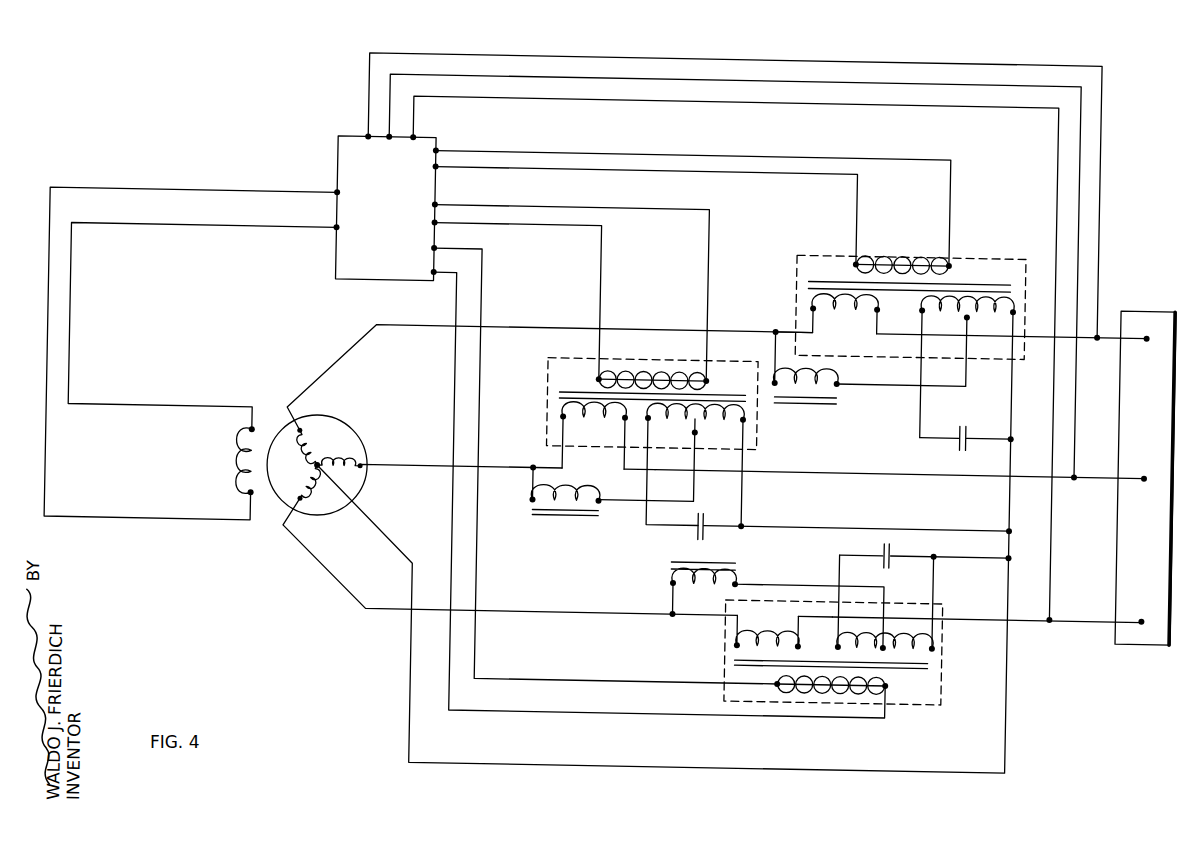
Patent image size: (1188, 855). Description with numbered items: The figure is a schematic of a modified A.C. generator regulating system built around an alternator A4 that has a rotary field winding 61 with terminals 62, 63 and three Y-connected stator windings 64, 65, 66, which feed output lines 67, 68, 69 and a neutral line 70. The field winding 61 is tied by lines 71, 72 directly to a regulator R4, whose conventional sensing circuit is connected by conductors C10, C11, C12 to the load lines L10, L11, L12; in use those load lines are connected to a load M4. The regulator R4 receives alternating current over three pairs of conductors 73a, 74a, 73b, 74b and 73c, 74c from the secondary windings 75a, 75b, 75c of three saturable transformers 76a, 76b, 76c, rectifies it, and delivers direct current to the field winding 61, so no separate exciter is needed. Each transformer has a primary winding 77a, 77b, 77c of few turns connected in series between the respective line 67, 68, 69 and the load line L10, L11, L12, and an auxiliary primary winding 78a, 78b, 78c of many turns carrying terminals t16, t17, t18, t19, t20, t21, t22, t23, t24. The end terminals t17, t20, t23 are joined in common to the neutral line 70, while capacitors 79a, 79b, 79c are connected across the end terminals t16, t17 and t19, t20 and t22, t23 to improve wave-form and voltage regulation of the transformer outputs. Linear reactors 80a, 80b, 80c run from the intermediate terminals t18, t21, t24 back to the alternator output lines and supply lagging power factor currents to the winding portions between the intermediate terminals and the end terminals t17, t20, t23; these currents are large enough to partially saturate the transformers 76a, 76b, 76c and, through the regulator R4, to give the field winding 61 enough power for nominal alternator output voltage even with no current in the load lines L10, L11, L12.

The regulator R4 is at (340, 137).
The conductor C10 is at (1103, 130).
The conductor C11 is at (1081, 176).
The conductor C12 is at (1058, 218).
The load M4 is at (1130, 312).
The alternator A4 is at (368, 490).
The rotary field winding 61 is at (245, 455).
The terminal 62 is at (252, 429).
The terminal 63 is at (251, 495).
The stator winding 64 is at (305, 437).
The stator winding 65 is at (345, 462).
The stator winding 66 is at (308, 492).
The output line 67 is at (430, 326).
The output line 68 is at (489, 465).
The output line 69 is at (520, 612).
The neutral line 70 is at (522, 762).
The line 71 is at (47, 348).
The line 72 is at (71, 358).
The conductor 73a is at (809, 158).
The conductor 73b is at (660, 210).
The conductor 73c is at (578, 678).
The conductor 74a is at (779, 173).
The conductor 74b is at (590, 226).
The conductor 74c is at (655, 715).
The secondary winding 75a is at (874, 265).
The secondary winding 75b is at (638, 380).
The secondary winding 75c is at (837, 694).
The saturable transformer 76a is at (797, 262).
The saturable transformer 76b is at (548, 363).
The saturable transformer 76c is at (942, 693).
The primary winding 77a is at (810, 310).
The primary winding 77b is at (561, 417).
The primary winding 77c is at (734, 647).
The auxiliary primary winding 78a is at (990, 307).
The auxiliary primary winding 78b is at (744, 431).
The auxiliary primary winding 78c is at (939, 651).
The capacitor 79a is at (962, 450).
The capacitor 79b is at (702, 540).
The capacitor 79c is at (887, 543).
The linear reactor 80a is at (837, 388).
The linear reactor 80b is at (557, 510).
The linear reactor 80c is at (670, 587).
The end terminal t16 is at (920, 312).
The end terminal t17 is at (1016, 314).
The intermediate terminal t18 is at (967, 319).
The end terminal t19 is at (649, 421).
The end terminal t20 is at (745, 418).
The intermediate terminal t21 is at (696, 436).
The end terminal t22 is at (837, 645).
The end terminal t23 is at (934, 648).
The intermediate terminal t24 is at (885, 646).
The load line L10 is at (1043, 337).
The load line L11 is at (1029, 477).
The load line L12 is at (1023, 626).